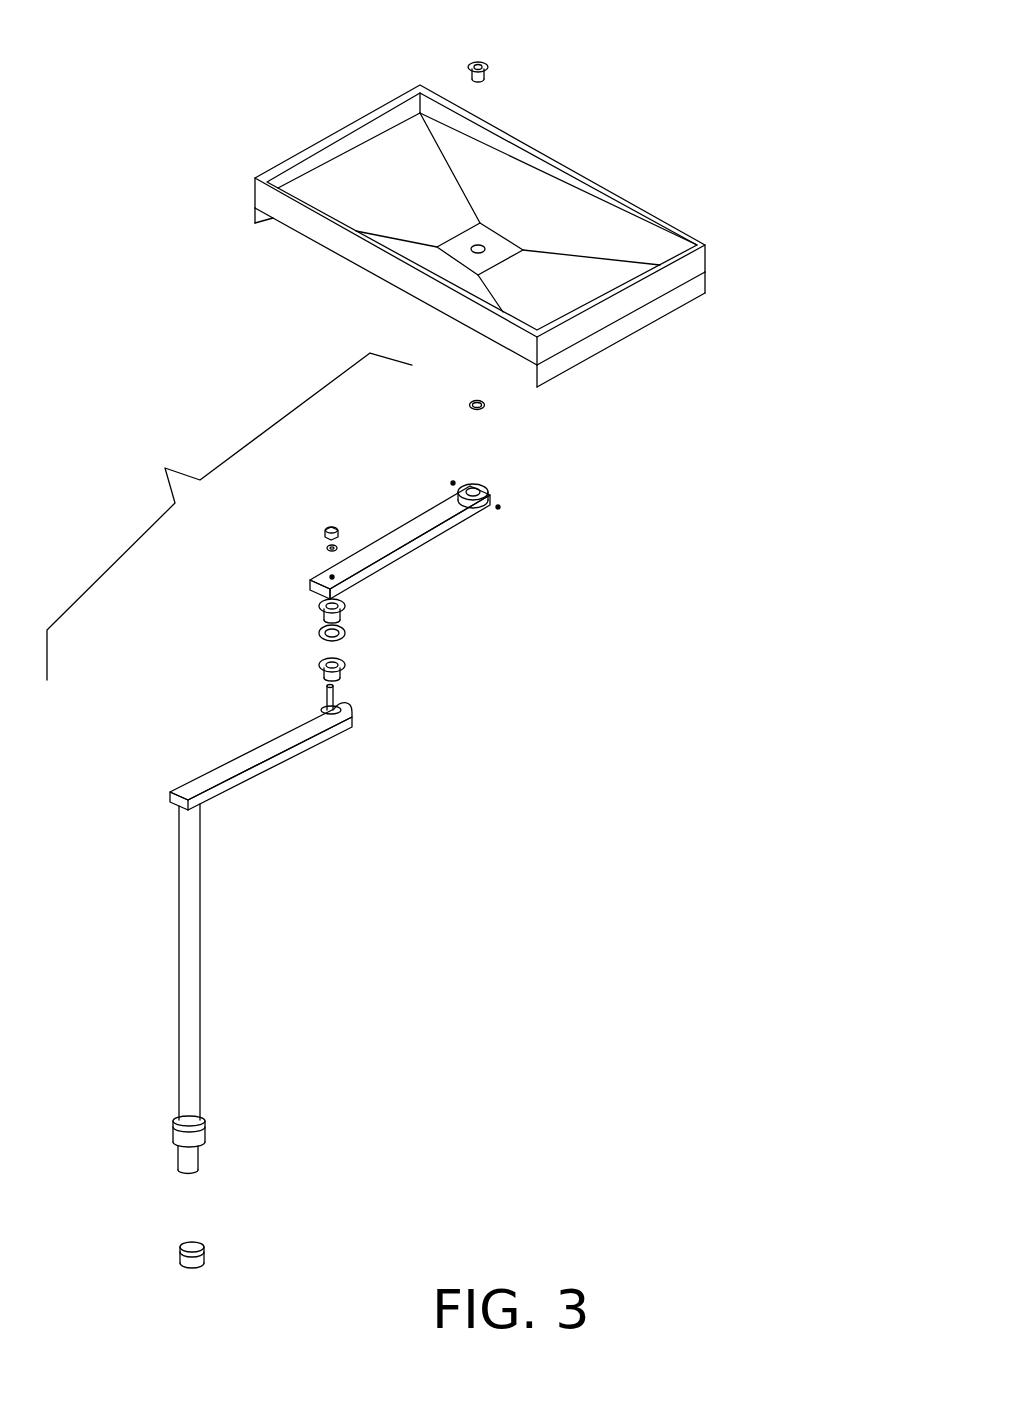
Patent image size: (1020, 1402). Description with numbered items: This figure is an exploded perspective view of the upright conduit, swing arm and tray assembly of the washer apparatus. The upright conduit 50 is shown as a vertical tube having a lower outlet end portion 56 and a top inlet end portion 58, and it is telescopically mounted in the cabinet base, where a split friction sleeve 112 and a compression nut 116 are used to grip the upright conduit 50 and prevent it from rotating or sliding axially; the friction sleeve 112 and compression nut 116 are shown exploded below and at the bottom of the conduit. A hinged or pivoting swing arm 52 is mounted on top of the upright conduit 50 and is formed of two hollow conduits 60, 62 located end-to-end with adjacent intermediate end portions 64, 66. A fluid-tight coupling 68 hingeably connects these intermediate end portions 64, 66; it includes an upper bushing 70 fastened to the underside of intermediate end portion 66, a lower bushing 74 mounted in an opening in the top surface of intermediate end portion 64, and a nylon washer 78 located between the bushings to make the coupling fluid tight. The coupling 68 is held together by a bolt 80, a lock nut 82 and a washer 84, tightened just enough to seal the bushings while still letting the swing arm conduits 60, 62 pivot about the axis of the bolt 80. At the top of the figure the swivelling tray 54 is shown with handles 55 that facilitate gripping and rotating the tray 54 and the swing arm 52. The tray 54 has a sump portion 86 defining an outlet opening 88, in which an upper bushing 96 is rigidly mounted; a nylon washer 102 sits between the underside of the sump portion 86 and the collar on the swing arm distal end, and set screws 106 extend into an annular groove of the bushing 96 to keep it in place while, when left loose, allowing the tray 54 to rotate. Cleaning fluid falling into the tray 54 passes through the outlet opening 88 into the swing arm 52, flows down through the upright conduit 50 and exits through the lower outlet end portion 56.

The upright conduit 50 is at (233, 989).
The swing arm 52 is at (229, 516).
The tray 54 is at (549, 231).
The handles 55 is at (256, 224).
The lower outlet end portion 56 is at (192, 1160).
The top inlet end portion 58 is at (190, 872).
The hollow conduit 60 is at (305, 772).
The hollow conduit 62 is at (437, 530).
The intermediate end portion 64 is at (342, 720).
The intermediate end portion 66 is at (403, 561).
The fluid-tight coupling 68 is at (292, 627).
The upper bushing 70 is at (318, 608).
The lower bushing 74 is at (318, 668).
The washer 78 is at (318, 637).
The bolt 80 is at (335, 695).
The lock nut 82 is at (327, 527).
The washer 84 is at (327, 548).
The sump portion 86 is at (536, 192).
The outlet opening 88 is at (481, 246).
The upper bushing 96 is at (488, 70).
The nylon washer 102 is at (485, 408).
The set screws 106 is at (448, 480).
The split friction sleeve 112 is at (207, 1252).
The compression nut 116 is at (203, 1124).